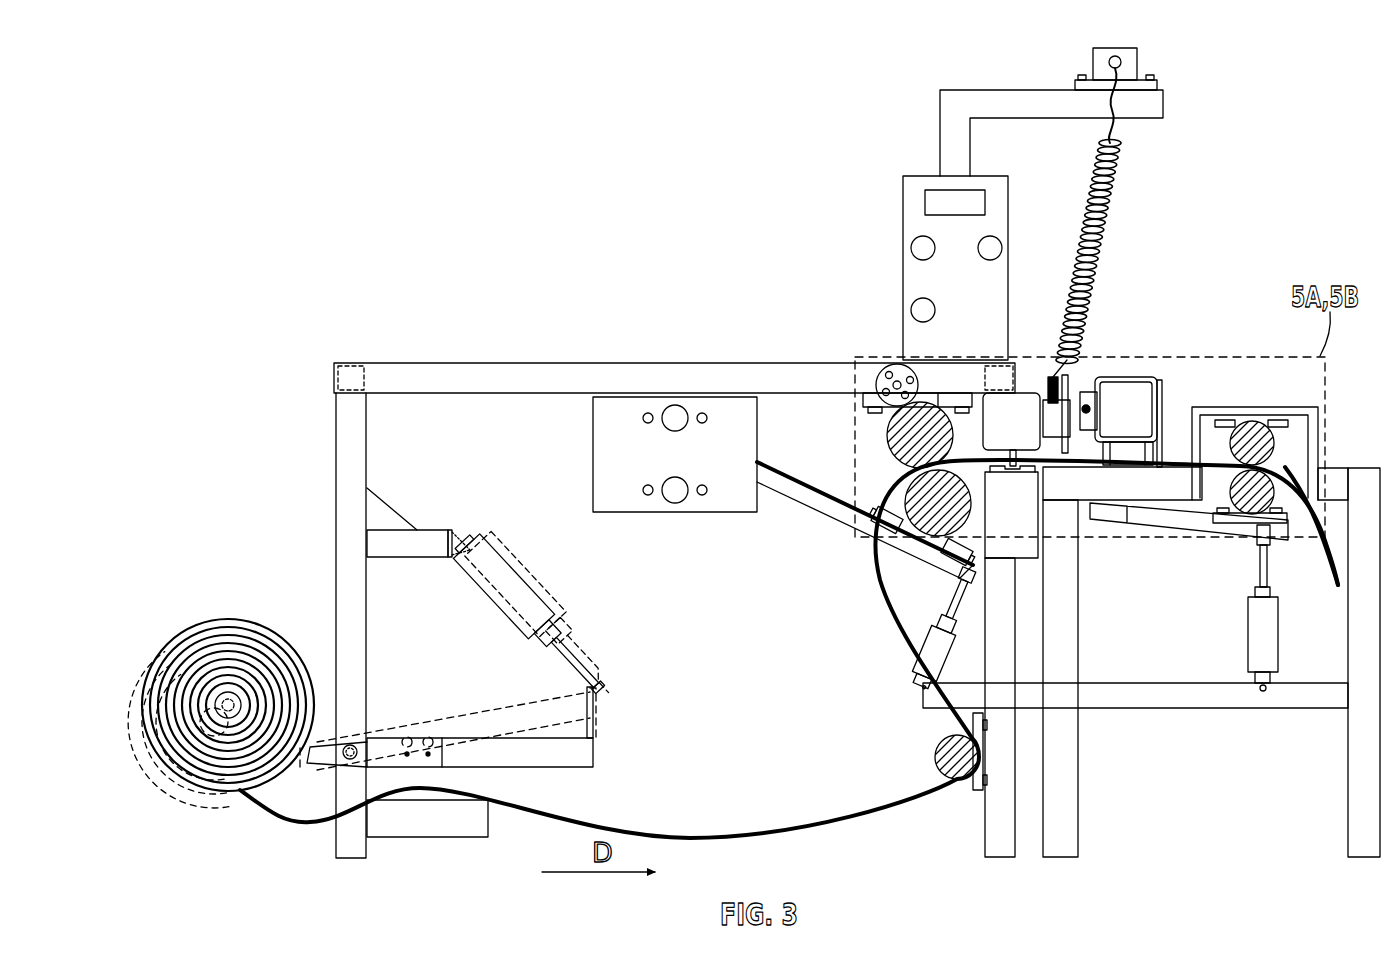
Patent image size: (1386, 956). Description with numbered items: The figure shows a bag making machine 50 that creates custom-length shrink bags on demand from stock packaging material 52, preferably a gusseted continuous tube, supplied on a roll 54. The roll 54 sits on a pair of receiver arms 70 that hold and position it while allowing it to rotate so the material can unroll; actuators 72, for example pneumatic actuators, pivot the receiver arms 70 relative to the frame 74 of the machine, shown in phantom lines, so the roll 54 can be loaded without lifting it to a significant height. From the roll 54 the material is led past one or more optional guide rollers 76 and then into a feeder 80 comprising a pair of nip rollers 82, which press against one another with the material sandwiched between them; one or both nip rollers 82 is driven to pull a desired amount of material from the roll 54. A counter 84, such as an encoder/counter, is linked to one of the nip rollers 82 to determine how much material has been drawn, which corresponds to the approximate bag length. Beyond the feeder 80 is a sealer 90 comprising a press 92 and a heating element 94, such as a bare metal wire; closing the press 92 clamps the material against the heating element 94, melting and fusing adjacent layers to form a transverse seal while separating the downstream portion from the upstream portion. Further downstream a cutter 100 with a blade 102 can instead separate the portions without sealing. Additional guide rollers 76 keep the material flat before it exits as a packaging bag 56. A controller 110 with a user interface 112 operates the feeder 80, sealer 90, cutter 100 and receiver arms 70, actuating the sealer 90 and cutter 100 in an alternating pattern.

The bag making machine 50 is at (388, 202).
The stock packaging material 52 is at (896, 625).
The roll 54 is at (204, 630).
The packaging bag 56 is at (1320, 565).
The receiver arms 70 is at (550, 770).
The actuators 72 is at (533, 582).
The frame 74 is at (431, 363).
The guide rollers 76 is at (1252, 432).
The feeder 80 is at (886, 474).
The nip rollers 82 is at (927, 523).
The counter 84 is at (883, 372).
The sealer 90 is at (1032, 376).
The press 92 is at (1030, 543).
The heating element 94 is at (982, 410).
The cutter 100 is at (1167, 378).
The blade 102 is at (1116, 395).
The controller 110 is at (912, 176).
The user interface 112 is at (914, 246).